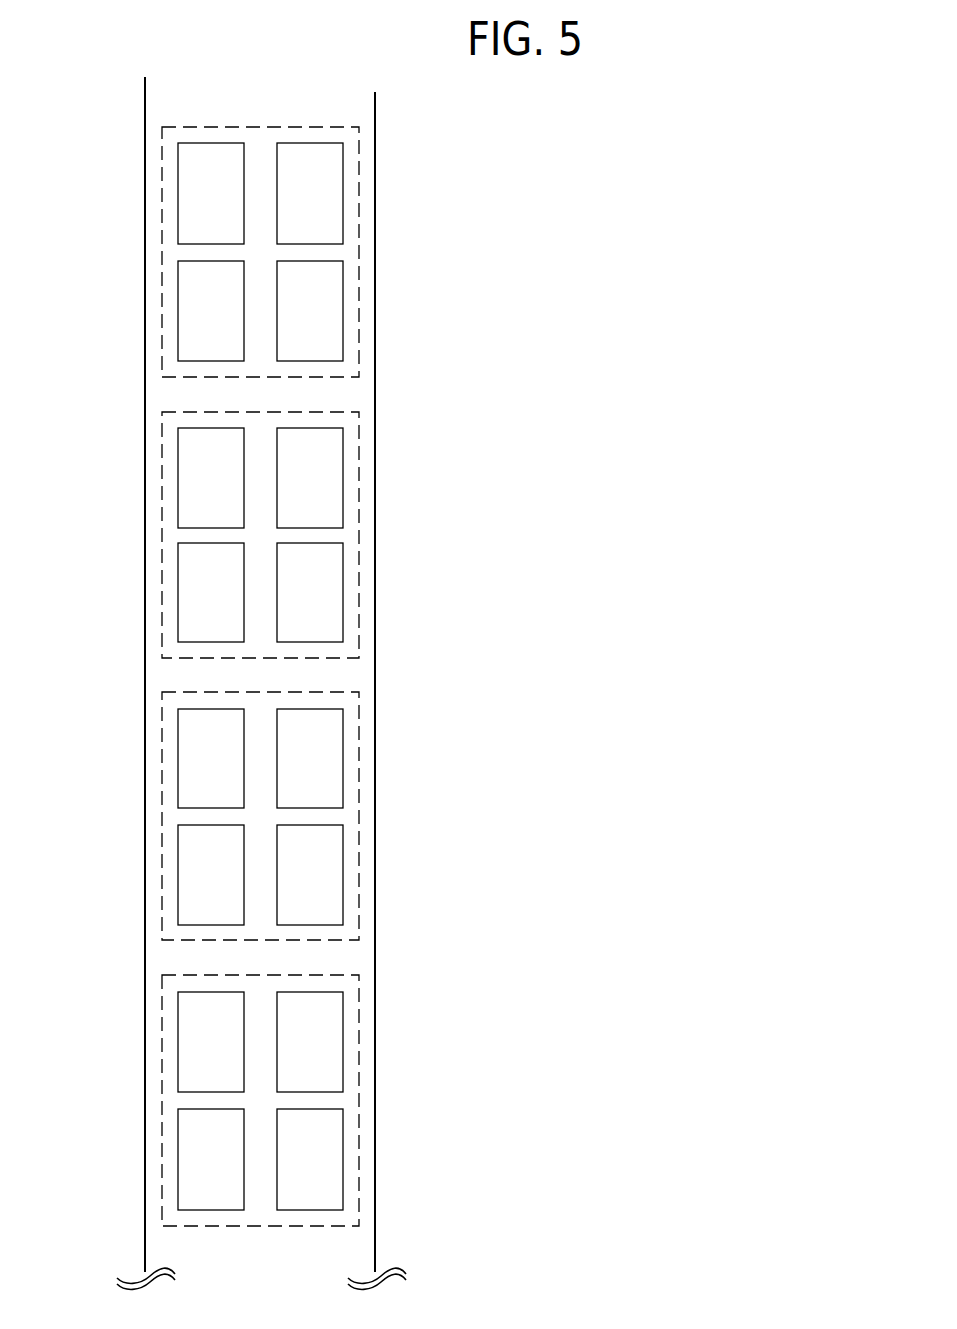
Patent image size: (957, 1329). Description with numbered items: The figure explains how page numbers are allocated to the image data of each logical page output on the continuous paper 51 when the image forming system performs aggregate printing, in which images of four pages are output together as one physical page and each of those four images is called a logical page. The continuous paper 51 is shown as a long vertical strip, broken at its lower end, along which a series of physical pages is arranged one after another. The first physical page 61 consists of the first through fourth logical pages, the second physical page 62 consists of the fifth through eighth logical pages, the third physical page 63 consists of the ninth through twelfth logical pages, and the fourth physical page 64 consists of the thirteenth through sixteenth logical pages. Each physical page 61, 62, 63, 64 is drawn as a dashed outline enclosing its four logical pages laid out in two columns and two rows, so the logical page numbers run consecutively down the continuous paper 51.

The continuous paper 51 is at (145, 383).
The physical page 61 is at (359, 260).
The physical page 62 is at (359, 474).
The physical page 63 is at (359, 754).
The physical page 64 is at (359, 1039).